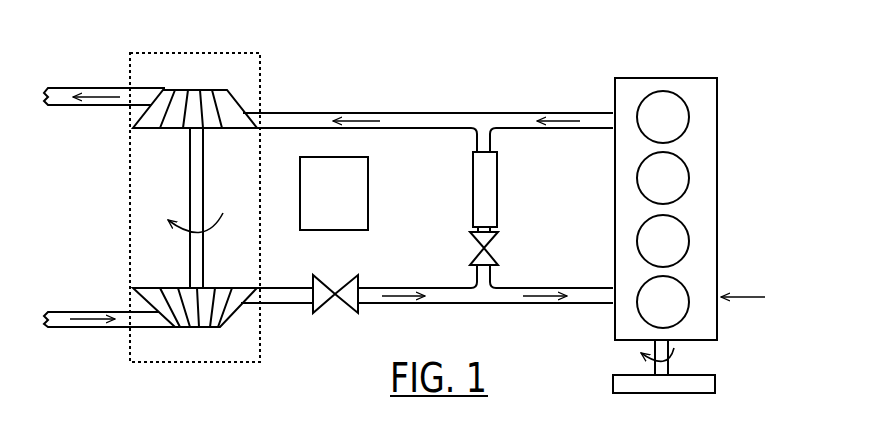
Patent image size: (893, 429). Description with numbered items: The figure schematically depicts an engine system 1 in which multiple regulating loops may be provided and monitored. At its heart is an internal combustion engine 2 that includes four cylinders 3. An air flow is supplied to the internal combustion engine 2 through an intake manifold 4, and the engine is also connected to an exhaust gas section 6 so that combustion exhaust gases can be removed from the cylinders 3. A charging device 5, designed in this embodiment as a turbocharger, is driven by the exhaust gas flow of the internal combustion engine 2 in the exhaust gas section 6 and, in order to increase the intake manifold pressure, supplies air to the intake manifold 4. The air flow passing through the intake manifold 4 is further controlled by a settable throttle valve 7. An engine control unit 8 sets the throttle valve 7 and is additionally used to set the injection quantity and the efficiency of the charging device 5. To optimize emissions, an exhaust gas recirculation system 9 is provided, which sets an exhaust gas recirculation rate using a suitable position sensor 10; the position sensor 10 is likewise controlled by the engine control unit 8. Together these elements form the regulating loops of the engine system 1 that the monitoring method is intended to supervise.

The engine system 1 is at (736, 77).
The internal combustion engine 2 is at (692, 235).
The cylinders 3 is at (672, 242).
The intake manifold 4 is at (482, 304).
The charging device 5 is at (130, 176).
The exhaust gas section 6 is at (412, 118).
The throttle valve 7 is at (347, 307).
The engine control unit 8 is at (368, 182).
The exhaust gas recirculation system 9 is at (520, 192).
The position sensor 10 is at (490, 256).